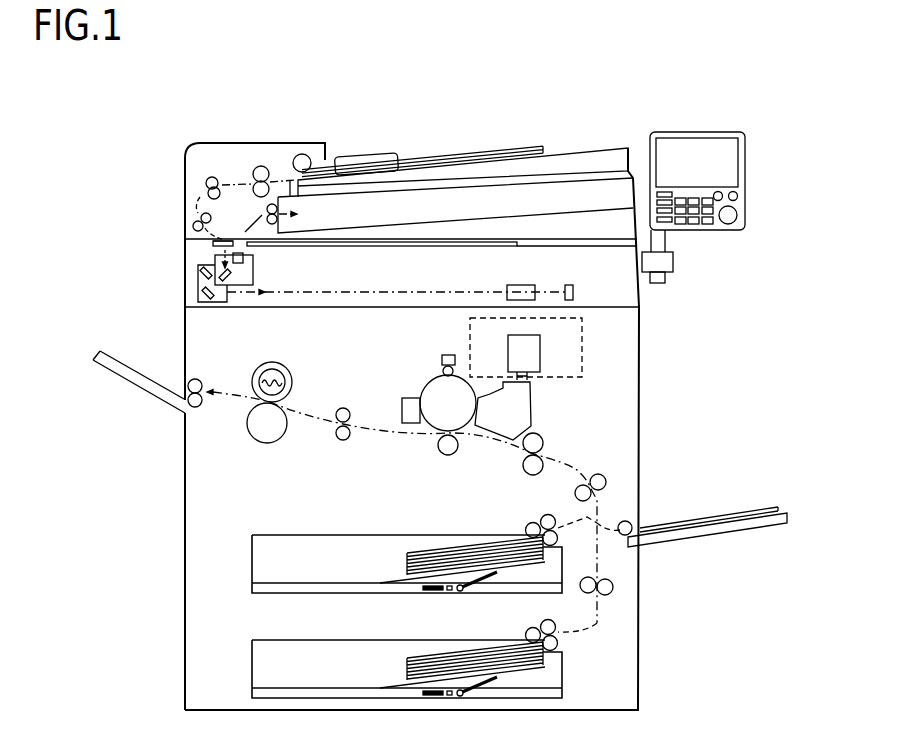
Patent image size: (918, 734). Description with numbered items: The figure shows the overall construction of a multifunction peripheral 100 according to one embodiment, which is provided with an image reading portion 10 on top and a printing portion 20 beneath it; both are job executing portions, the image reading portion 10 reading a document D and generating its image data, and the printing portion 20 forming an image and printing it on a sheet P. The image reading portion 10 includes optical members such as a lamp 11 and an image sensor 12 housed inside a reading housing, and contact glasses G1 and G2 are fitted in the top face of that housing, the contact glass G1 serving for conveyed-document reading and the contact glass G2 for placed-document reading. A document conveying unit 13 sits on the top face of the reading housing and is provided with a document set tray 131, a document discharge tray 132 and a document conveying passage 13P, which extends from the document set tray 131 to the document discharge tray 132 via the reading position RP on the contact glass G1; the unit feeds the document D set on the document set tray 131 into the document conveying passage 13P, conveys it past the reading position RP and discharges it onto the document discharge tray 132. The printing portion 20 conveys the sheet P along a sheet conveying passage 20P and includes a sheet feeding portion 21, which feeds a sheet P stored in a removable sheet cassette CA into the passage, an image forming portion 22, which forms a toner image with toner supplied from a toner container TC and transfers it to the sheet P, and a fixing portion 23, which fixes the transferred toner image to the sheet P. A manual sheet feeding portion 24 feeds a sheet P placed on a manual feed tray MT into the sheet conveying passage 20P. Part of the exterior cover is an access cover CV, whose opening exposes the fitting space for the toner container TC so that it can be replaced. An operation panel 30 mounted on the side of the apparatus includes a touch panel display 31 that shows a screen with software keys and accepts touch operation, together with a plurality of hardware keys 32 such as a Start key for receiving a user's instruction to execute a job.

The multifunction peripheral 100 is at (193, 112).
The image reading portion 10 is at (641, 300).
The printing portion 20 is at (641, 367).
The document conveying unit 13 is at (327, 141).
The document set tray 131 is at (560, 160).
The document discharge tray 132 is at (462, 218).
The document D is at (510, 150).
The document conveying passage 13P is at (233, 183).
The reading position RP is at (225, 237).
The contact glass G1 is at (213, 243).
The contact glass G2 is at (457, 244).
The lamp 11 is at (243, 258).
The image sensor 12 is at (570, 286).
The operation panel 30 is at (724, 191).
The touch panel display 31 is at (732, 169).
The hardware keys 32 is at (728, 215).
The image forming portion 22 is at (412, 380).
The fixing portion 23 is at (295, 432).
The toner container TC is at (541, 356).
The access cover CV is at (582, 343).
The sheet conveying passage 20P is at (380, 438).
The manual sheet feeding portion 24 is at (627, 512).
The sheet feeding portion 21 is at (522, 518).
The sheet cassette CA is at (268, 535).
The sheet P is at (405, 553).
The manual feed tray MT is at (685, 537).